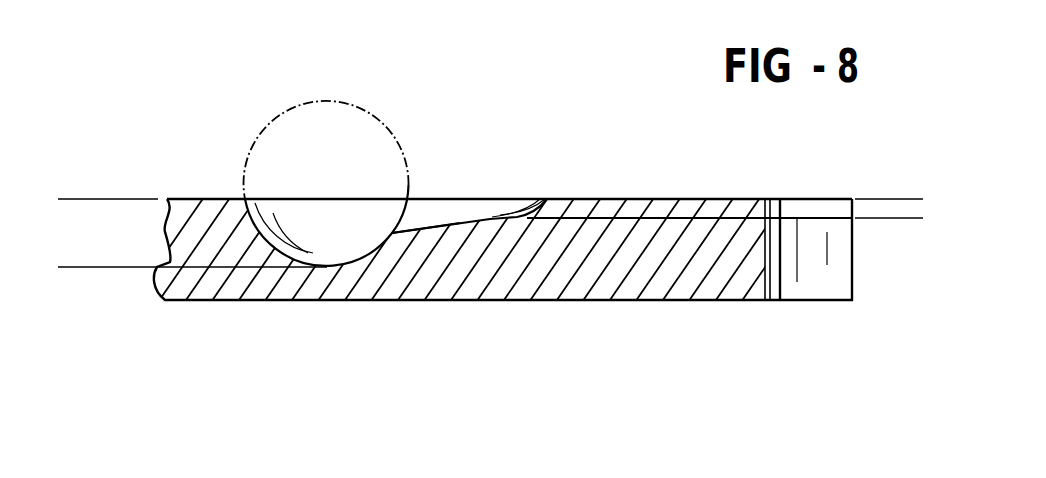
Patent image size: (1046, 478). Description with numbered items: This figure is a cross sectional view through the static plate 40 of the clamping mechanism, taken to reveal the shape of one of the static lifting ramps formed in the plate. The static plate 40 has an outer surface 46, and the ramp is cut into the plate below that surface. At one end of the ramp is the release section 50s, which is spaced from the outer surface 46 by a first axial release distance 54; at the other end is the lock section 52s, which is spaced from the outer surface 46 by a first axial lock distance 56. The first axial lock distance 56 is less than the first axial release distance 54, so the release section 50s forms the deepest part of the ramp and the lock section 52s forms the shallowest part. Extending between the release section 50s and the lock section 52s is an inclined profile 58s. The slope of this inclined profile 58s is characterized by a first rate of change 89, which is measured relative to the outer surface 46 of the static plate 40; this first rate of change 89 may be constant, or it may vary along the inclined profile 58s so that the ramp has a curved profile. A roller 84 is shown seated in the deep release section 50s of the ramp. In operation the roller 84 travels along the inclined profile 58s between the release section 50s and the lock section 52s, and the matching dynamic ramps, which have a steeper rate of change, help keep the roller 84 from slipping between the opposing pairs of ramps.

The static plate 40 is at (728, 197).
The outer surface 46 is at (602, 197).
The first axial release distance 54 is at (83, 199).
The first axial lock distance 56 is at (892, 253).
The roller 84 is at (377, 117).
The first rate of change 89 is at (451, 225).
The release section 50s is at (330, 270).
The lock section 52s is at (508, 214).
The inclined profile 58s is at (422, 229).